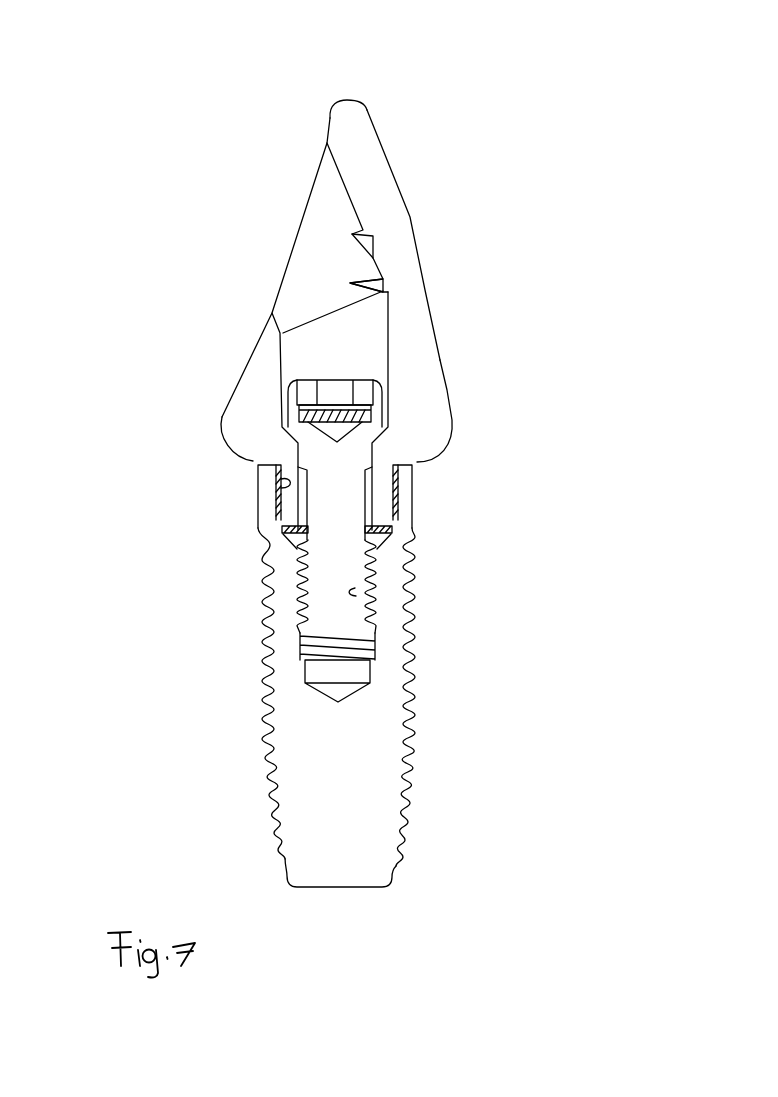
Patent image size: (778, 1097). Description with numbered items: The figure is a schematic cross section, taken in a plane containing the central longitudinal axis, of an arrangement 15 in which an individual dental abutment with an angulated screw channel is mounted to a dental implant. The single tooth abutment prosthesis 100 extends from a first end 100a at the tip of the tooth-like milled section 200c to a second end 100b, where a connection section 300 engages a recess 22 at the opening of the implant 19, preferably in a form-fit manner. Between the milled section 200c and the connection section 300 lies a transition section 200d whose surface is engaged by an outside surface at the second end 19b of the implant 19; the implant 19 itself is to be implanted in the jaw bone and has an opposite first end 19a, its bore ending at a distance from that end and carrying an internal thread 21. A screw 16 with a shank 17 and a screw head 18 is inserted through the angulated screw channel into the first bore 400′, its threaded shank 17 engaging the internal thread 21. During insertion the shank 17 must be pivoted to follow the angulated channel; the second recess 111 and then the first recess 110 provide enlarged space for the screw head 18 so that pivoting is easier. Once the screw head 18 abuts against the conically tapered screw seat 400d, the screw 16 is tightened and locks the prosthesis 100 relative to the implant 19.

The arrangement 15 is at (525, 137).
The single tooth abutment prosthesis 100 is at (437, 321).
The first end 100a is at (366, 108).
The second end 100b is at (291, 530).
The first recess 110 is at (388, 282).
The second recess 111 is at (385, 232).
The milled section 200c is at (444, 363).
The transition section 200d is at (253, 470).
The connection section 300 is at (281, 510).
The first bore 400′ is at (315, 362).
The screw seat 400d is at (280, 433).
The screw 16 is at (340, 511).
The shank 17 is at (347, 567).
The screw head 18 is at (380, 406).
The implant 19 is at (368, 772).
The first end 19a is at (378, 888).
The second end 19b is at (413, 477).
The internal thread 21 is at (355, 605).
The recess 22 is at (276, 491).